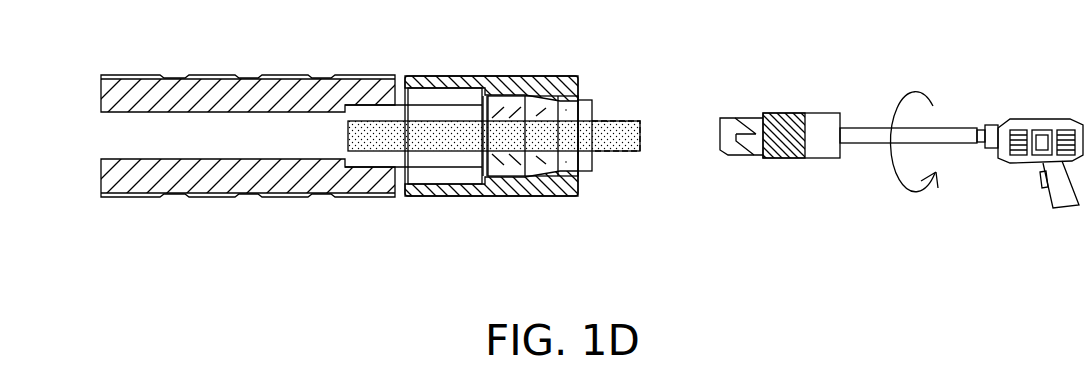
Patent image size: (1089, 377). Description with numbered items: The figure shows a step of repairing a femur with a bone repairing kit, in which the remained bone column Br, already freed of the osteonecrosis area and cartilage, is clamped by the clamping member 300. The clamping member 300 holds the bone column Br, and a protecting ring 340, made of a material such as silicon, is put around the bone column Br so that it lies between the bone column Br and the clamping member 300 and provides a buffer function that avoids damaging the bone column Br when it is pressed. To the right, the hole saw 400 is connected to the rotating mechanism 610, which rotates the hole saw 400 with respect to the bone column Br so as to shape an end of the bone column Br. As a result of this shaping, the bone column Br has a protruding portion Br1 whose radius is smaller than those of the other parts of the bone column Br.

The clamping member 300 is at (225, 207).
The bone column Br is at (370, 152).
The protruding portion Br1 is at (640, 137).
The protecting ring 340 is at (514, 160).
The hole saw 400 is at (779, 96).
The rotating mechanism 610 is at (1040, 122).